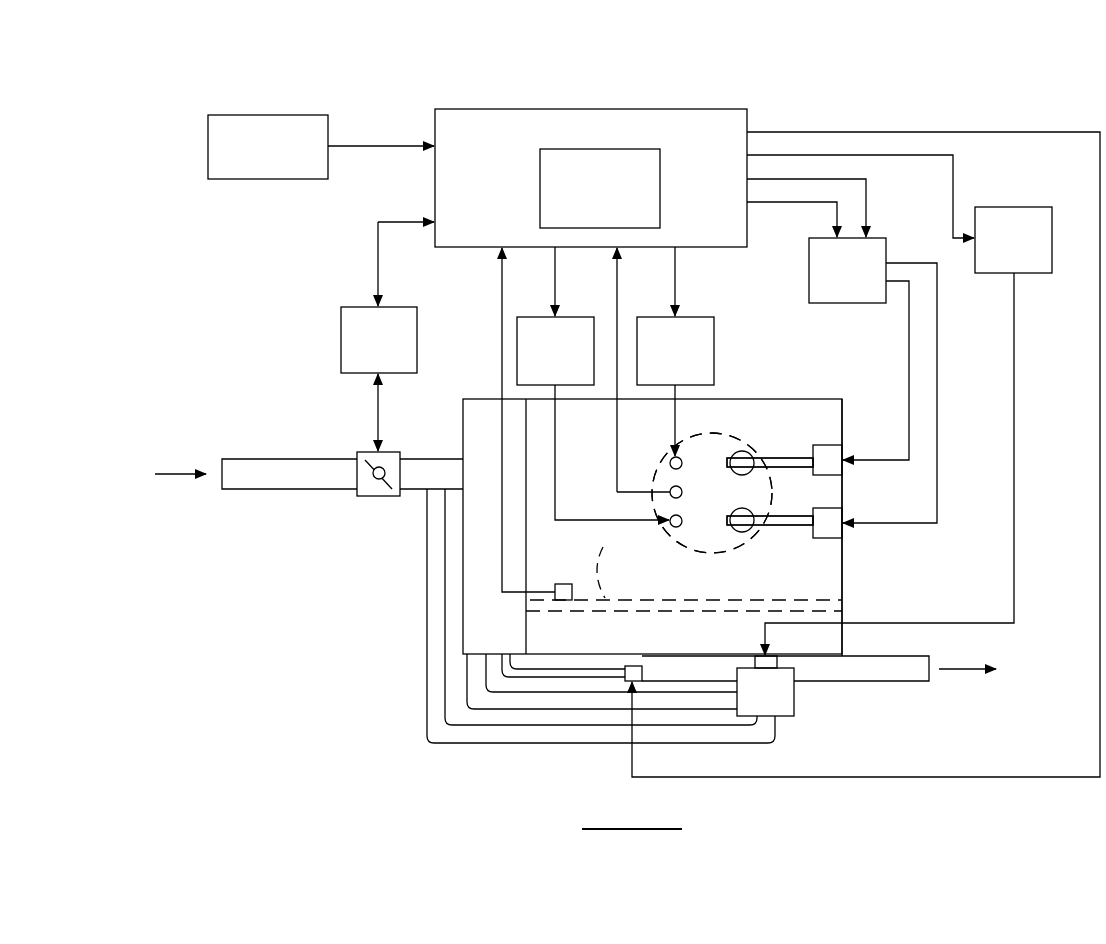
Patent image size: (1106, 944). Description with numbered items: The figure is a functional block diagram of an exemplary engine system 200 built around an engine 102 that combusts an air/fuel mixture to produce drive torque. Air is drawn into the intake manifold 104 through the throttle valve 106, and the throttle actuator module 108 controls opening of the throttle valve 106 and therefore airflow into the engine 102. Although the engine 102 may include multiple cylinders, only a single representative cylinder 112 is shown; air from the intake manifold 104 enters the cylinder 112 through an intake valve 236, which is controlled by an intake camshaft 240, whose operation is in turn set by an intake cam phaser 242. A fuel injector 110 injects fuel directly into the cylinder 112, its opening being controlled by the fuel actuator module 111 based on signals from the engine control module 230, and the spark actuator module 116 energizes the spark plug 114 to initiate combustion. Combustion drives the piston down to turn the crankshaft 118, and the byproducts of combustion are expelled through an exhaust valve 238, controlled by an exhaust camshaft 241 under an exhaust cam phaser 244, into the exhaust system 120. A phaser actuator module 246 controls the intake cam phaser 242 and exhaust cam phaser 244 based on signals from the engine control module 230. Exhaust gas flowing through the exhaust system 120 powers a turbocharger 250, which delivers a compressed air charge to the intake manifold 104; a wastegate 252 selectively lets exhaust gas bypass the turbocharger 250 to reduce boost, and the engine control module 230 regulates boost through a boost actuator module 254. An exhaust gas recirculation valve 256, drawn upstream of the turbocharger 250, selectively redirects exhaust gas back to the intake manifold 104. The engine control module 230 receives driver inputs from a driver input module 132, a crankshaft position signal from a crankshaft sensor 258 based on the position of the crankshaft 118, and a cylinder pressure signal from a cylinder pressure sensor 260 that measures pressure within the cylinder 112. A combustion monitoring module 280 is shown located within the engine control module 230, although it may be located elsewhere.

The engine system 200 is at (138, 77).
The driver input module 132 is at (208, 149).
The engine control module 230 is at (591, 109).
The combustion monitoring module 280 is at (660, 188).
The throttle actuator module 108 is at (351, 307).
The throttle valve 106 is at (382, 497).
The fuel actuator module 111 is at (568, 317).
The spark actuator module 116 is at (714, 322).
The phaser actuator module 246 is at (886, 247).
The boost actuator module 254 is at (1031, 273).
The intake manifold 104 is at (476, 399).
The engine 102 is at (782, 399).
The crankshaft sensor 258 is at (563, 584).
The crankshaft 118 is at (603, 550).
The cylinder 112 is at (686, 566).
The spark plug 114 is at (671, 458).
The cylinder pressure sensor 260 is at (683, 497).
The fuel injector 110 is at (668, 530).
The intake valve 236 is at (744, 446).
The intake camshaft 240 is at (791, 458).
The intake cam phaser 242 is at (828, 445).
The exhaust valve 238 is at (742, 534).
The exhaust camshaft 241 is at (792, 526).
The exhaust cam phaser 244 is at (829, 538).
The exhaust system 120 is at (891, 684).
The turbocharger 250 is at (795, 700).
The wastegate 252 is at (754, 658).
The exhaust gas recirculation valve 256 is at (633, 665).